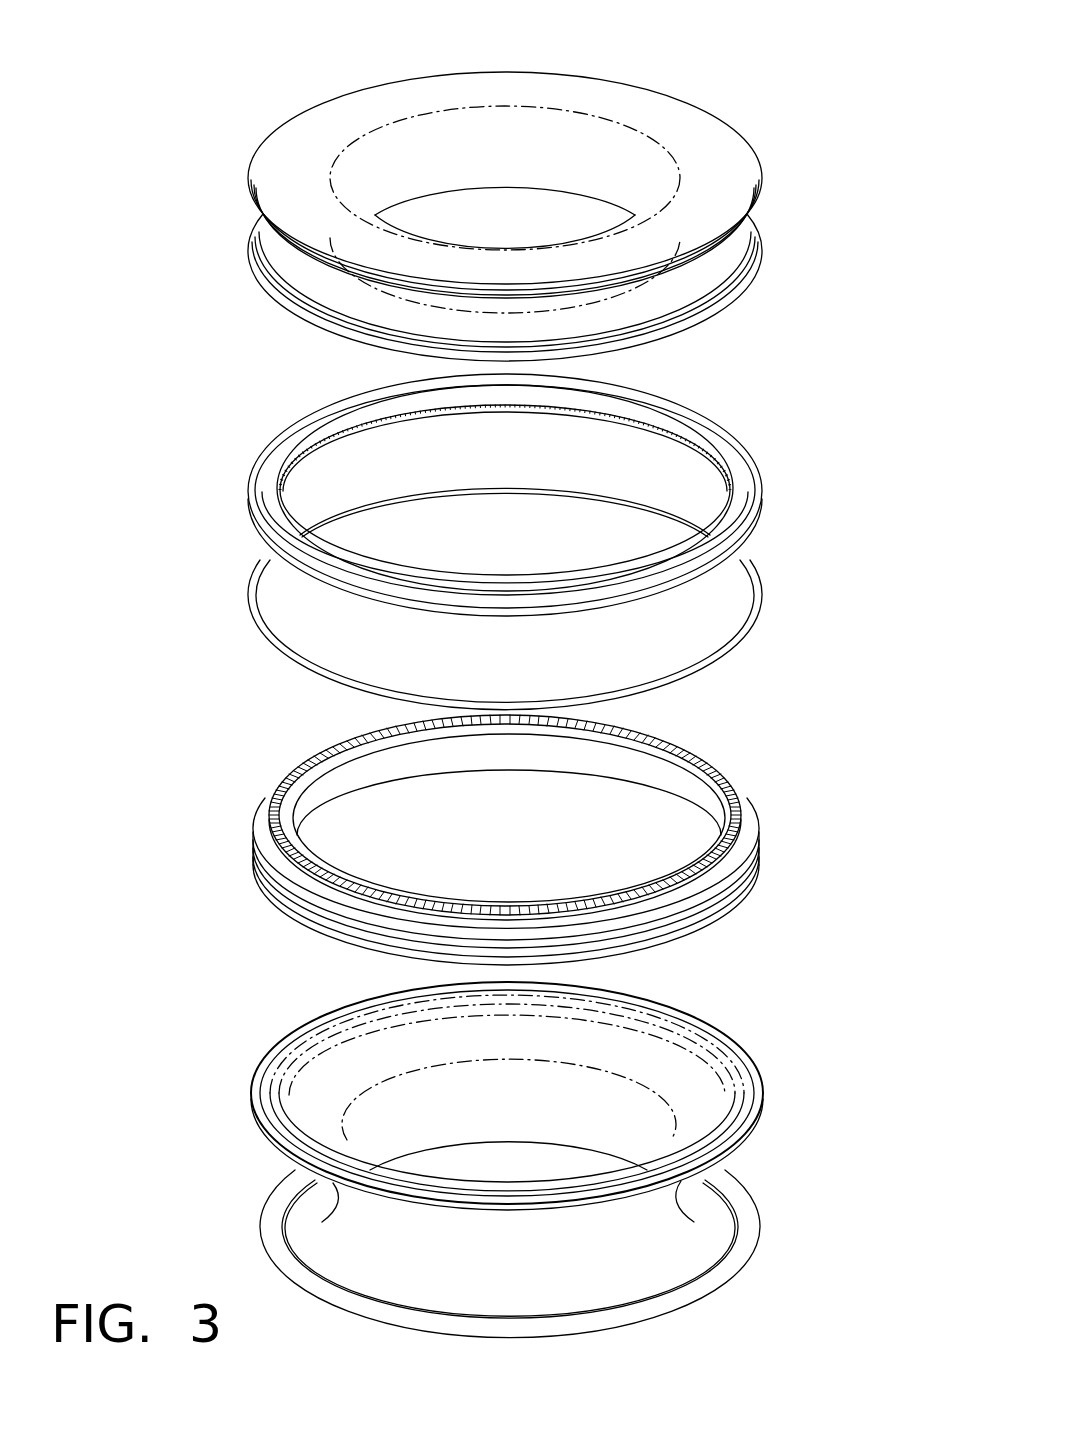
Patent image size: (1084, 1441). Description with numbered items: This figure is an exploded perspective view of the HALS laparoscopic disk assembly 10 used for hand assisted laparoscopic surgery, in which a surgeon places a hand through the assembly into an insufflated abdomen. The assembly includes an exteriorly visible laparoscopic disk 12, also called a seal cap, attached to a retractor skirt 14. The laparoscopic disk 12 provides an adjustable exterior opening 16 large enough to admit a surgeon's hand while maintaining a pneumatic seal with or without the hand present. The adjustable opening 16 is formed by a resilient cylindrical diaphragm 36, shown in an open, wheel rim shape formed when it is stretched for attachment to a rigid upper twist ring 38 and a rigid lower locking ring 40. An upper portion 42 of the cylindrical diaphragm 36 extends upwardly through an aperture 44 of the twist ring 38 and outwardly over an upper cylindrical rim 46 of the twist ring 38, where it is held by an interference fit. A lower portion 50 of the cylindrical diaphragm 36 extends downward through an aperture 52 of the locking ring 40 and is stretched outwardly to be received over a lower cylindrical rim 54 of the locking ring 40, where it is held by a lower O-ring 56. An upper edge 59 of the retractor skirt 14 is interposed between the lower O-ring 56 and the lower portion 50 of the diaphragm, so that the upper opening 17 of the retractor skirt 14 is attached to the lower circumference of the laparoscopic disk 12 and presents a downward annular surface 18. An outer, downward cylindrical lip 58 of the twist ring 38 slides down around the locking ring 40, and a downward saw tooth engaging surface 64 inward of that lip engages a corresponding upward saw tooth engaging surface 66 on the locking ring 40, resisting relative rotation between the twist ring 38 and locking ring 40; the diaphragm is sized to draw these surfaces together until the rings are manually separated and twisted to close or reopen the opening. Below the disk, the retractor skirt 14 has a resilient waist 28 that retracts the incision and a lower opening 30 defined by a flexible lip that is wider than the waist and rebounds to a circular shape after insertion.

The HALS laparoscopic disk assembly 10 is at (860, 380).
The laparoscopic disk 12 is at (807, 440).
The retractor skirt 14 is at (768, 1216).
The adjustable exterior opening 16 is at (628, 48).
The upper opening 17 is at (765, 1092).
The downward annular surface 18 is at (282, 1152).
The resilient waist 28 is at (633, 1245).
The lower opening 30 is at (730, 1278).
The cylindrical diaphragm 36 is at (652, 105).
The twist ring 38 is at (708, 398).
The locking ring 40 is at (776, 835).
The upper portion 42 is at (720, 140).
The aperture 44 is at (483, 400).
The upper cylindrical rim 46 is at (763, 503).
The lower portion 50 is at (738, 258).
The aperture 52 is at (580, 755).
The lower cylindrical rim 54 is at (763, 886).
The lower O-ring 56 is at (764, 626).
The outer, downward cylindrical lip 58 is at (607, 607).
The upper edge 59 is at (730, 1032).
The downward saw tooth engaging surface 64 is at (598, 418).
The upward saw tooth engaging surface 66 is at (727, 778).